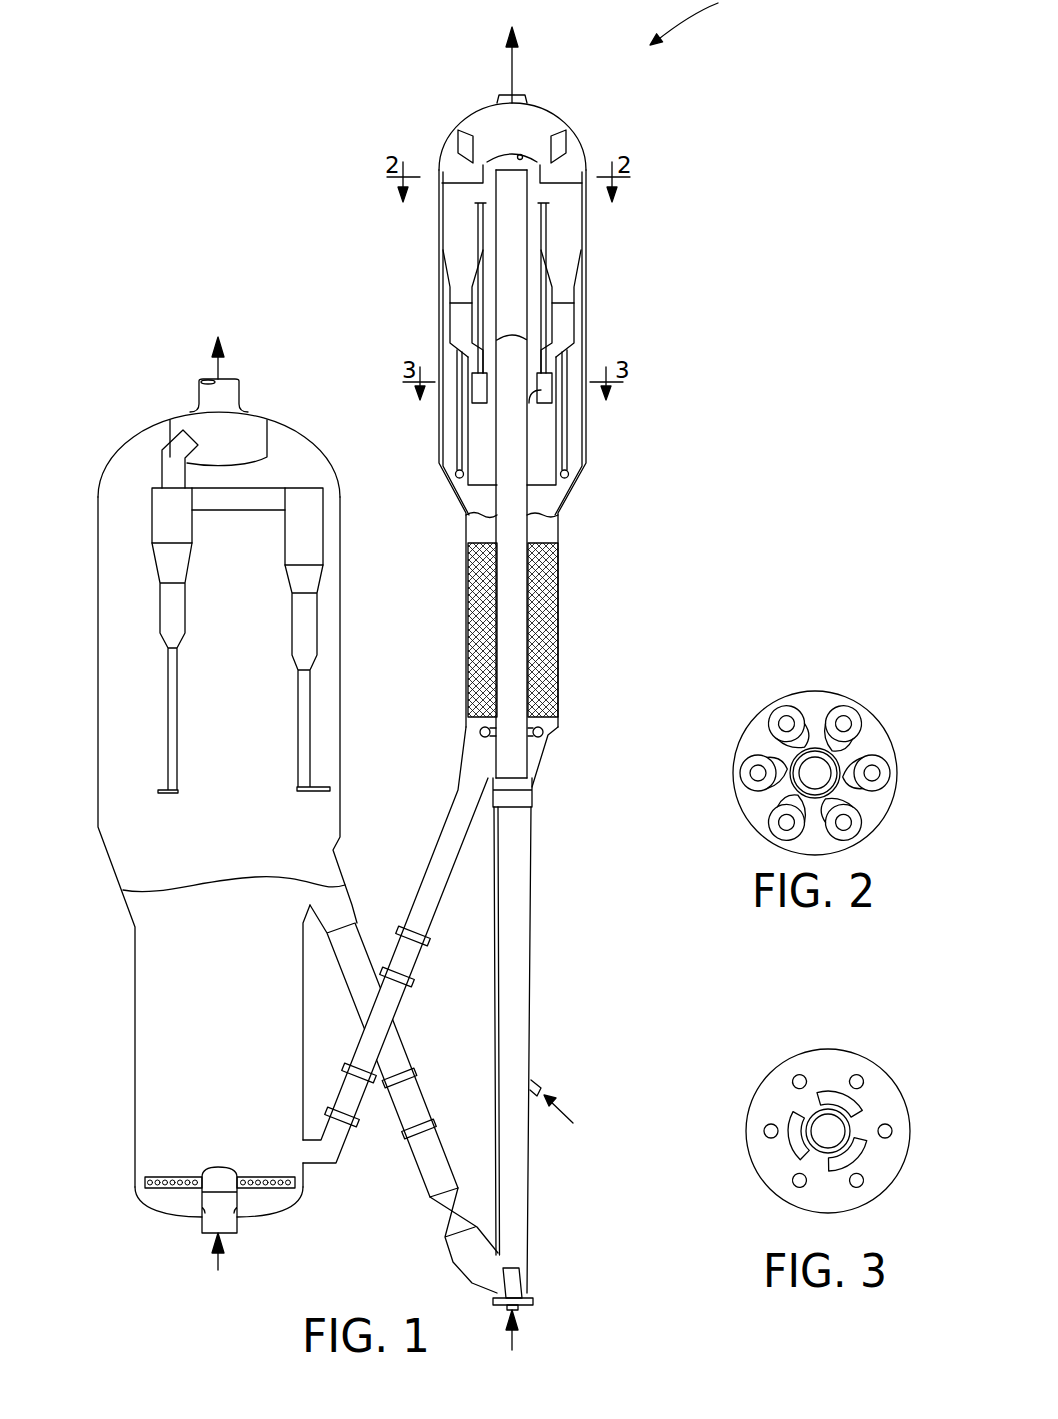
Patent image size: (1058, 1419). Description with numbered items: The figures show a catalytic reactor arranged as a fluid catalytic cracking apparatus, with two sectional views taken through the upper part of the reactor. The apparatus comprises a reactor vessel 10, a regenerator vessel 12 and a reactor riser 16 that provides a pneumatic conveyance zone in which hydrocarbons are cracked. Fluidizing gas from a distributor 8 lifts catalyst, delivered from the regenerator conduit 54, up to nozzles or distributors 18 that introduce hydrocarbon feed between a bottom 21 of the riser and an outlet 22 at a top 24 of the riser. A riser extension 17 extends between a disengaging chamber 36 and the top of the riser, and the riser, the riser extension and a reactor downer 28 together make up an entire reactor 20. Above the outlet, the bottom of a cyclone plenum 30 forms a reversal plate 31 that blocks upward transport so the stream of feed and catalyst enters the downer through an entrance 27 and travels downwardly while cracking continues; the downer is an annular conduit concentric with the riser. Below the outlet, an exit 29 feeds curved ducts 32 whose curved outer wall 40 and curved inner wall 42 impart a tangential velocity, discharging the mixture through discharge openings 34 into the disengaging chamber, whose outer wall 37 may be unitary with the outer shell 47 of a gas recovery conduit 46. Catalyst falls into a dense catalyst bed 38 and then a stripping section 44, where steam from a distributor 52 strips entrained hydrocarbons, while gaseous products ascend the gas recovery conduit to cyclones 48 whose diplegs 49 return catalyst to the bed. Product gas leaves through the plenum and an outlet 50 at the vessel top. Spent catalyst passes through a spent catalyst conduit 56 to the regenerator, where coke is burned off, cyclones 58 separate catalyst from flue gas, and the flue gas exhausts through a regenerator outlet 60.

In FIG. 1, the distributor 8 is at (513, 1282).
In FIG. 1, the reactor vessel 10 is at (585, 353).
In FIG. 2, the reactor vessel 10 is at (897, 777).
In FIG. 3, the reactor vessel 10 is at (847, 1207).
In FIG. 1, the regenerator vessel 12 is at (98, 760).
In FIG. 1, the reactor riser 16 is at (532, 837).
In FIG. 2, the reactor riser 16 is at (825, 773).
In FIG. 3, the reactor riser 16 is at (822, 1123).
In FIG. 1, the riser extension 17 is at (497, 257).
In FIG. 1, the nozzles or distributors 18 is at (530, 1083).
In FIG. 1, the reactor 20 is at (566, 282).
In FIG. 1, the bottom 21 is at (533, 1295).
In FIG. 1, the outlet 22 is at (490, 153).
In FIG. 1, the top 24 is at (535, 167).
In FIG. 1, the entrance 27 is at (487, 162).
In FIG. 1, the reactor downer 28 is at (537, 215).
In FIG. 2, the reactor downer 28 is at (822, 750).
In FIG. 3, the reactor downer 28 is at (812, 1110).
In FIG. 1, the exit 29 is at (537, 397).
In FIG. 1, the cyclone plenum 30 is at (548, 123).
In FIG. 1, the reversal plate 31 is at (522, 153).
In FIG. 1, the curved duct 32 is at (465, 357).
In FIG. 3, the curved duct 32 is at (842, 1097).
In FIG. 1, the discharge opening 34 is at (548, 398).
In FIG. 3, the discharge opening 34 is at (858, 1112).
In FIG. 1, the disengaging chamber 36 is at (477, 432).
In FIG. 3, the disengaging chamber 36 is at (790, 1158).
In FIG. 1, the outer wall 37 is at (558, 453).
In FIG. 1, the dense catalyst bed 38 is at (487, 513).
In FIG. 3, the curved outer wall 40 is at (788, 1133).
In FIG. 3, the curved inner wall 42 is at (840, 1150).
In FIG. 1, the stripping section 44 is at (558, 613).
In FIG. 1, the gas recovery conduit 46 is at (483, 288).
In FIG. 1, the outer shell 47 is at (545, 268).
In FIG. 1, the cyclone 48 is at (453, 242).
In FIG. 2, the cyclone 48 is at (780, 740).
In FIG. 1, the diplegs 49 is at (462, 367).
In FIG. 3, the diplegs 49 is at (767, 1123).
In FIG. 1, the outlet 50 is at (500, 100).
In FIG. 1, the distributor 52 is at (562, 732).
In FIG. 1, the regenerator conduit 54 is at (397, 1055).
In FIG. 1, the spent catalyst conduit 56 is at (445, 850).
In FIG. 1, the cyclones 58 is at (158, 572).
In FIG. 1, the regenerator outlet 60 is at (195, 397).